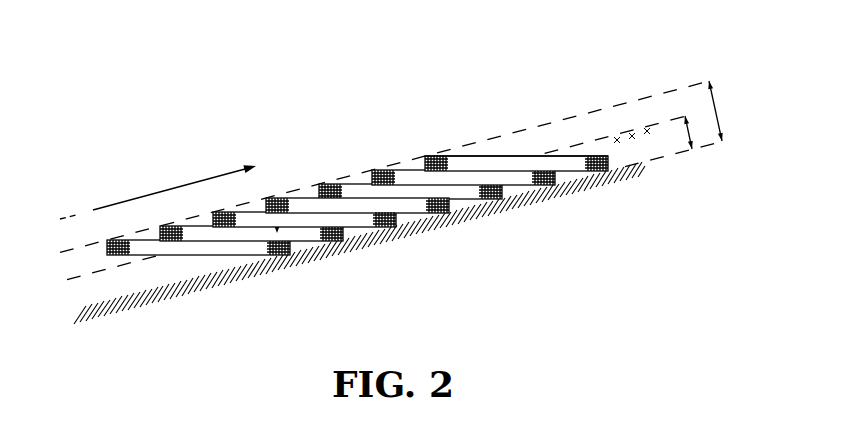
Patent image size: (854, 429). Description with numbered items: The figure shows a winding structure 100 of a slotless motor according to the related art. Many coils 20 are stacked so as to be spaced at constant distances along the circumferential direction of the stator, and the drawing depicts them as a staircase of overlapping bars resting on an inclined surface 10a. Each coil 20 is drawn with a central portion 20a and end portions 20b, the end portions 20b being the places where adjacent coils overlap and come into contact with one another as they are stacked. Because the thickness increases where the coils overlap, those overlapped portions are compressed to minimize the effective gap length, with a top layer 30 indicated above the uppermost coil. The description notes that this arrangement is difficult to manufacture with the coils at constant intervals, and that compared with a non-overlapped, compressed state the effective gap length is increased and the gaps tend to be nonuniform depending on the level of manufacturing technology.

The electronic device / electrode structure 100 is at (410, 136).
The top surface of substrate 10a is at (581, 157).
The electrode 20 is at (437, 185).
The first electrode portion 20a is at (383, 198).
The second electrode portion (end block) 20b is at (439, 211).
The upper layer 30 is at (545, 158).